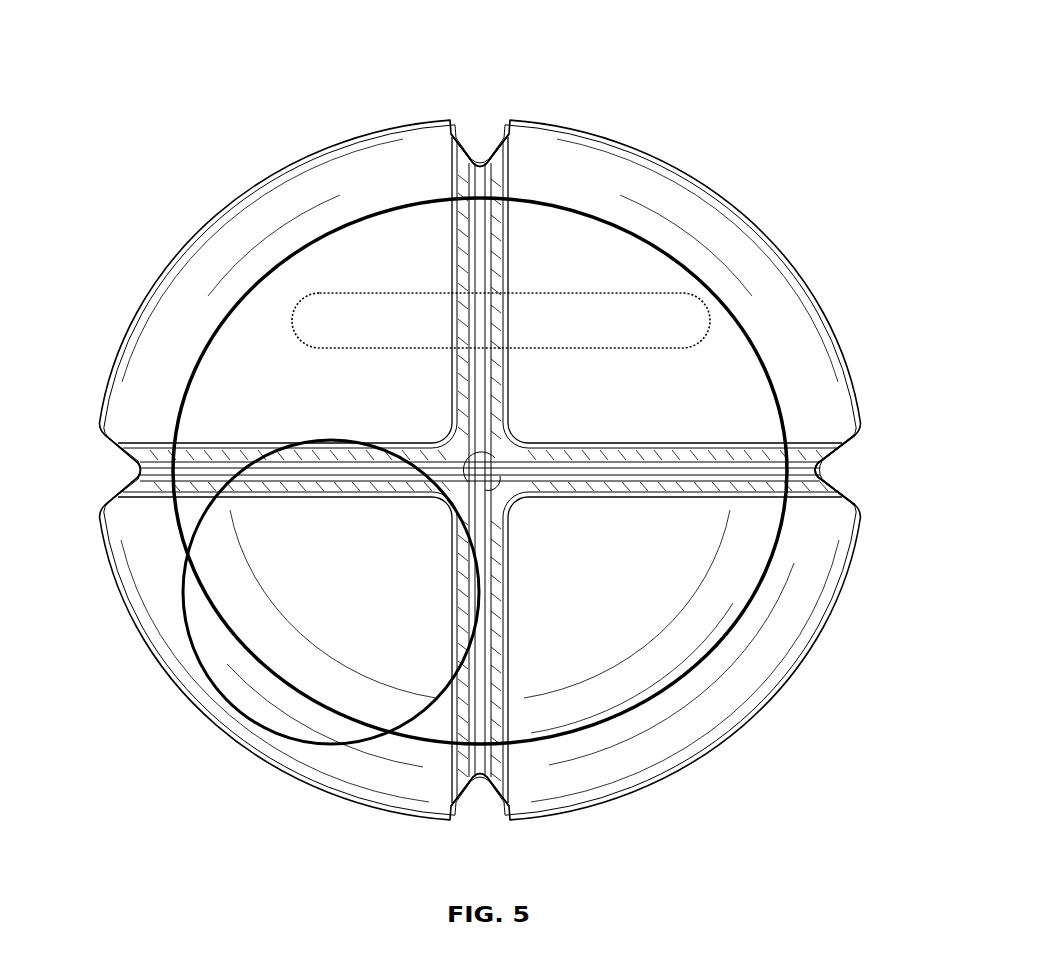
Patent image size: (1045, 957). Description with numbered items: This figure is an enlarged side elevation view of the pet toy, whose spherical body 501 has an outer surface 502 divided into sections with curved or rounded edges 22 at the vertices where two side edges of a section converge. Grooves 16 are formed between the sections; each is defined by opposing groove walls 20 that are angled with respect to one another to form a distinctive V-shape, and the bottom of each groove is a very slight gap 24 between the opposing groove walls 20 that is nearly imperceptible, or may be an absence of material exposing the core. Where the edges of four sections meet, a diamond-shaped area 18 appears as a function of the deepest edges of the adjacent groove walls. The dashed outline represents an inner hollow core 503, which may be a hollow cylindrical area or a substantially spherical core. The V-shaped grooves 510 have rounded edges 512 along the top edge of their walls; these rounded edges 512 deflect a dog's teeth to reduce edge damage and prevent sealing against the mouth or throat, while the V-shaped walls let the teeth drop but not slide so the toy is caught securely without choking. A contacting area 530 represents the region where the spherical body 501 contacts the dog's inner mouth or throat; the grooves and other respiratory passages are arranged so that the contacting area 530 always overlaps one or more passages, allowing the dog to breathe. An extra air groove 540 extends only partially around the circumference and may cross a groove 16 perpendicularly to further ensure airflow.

The spherical body 501 is at (335, 120).
The outer surface 502 is at (336, 186).
The inner hollow core 503 is at (278, 250).
The V-shaped groove 510 is at (800, 480).
The rounded edge 512 is at (808, 442).
The contacting area 530 is at (275, 740).
The extra air groove 540 is at (580, 288).
The groove 16 is at (480, 148).
The diamond-shaped area 18 is at (488, 458).
The groove wall 20 is at (468, 215).
The rounded edge 22 is at (432, 122).
The gap 24 is at (478, 290).